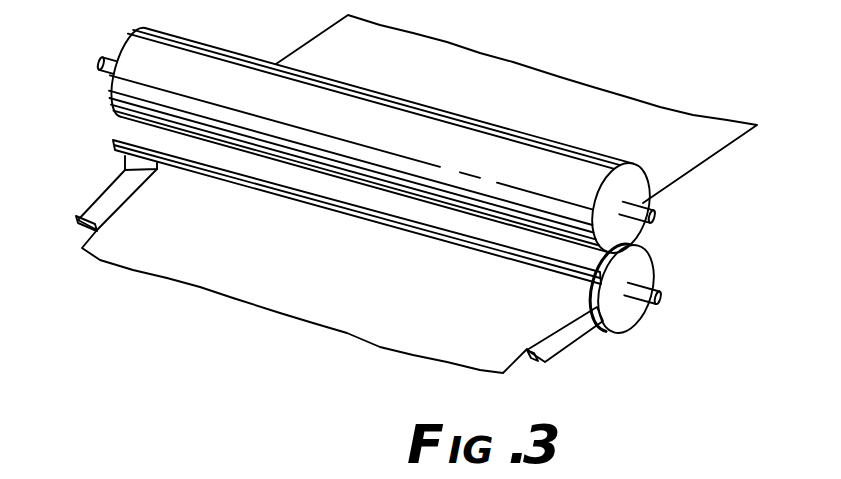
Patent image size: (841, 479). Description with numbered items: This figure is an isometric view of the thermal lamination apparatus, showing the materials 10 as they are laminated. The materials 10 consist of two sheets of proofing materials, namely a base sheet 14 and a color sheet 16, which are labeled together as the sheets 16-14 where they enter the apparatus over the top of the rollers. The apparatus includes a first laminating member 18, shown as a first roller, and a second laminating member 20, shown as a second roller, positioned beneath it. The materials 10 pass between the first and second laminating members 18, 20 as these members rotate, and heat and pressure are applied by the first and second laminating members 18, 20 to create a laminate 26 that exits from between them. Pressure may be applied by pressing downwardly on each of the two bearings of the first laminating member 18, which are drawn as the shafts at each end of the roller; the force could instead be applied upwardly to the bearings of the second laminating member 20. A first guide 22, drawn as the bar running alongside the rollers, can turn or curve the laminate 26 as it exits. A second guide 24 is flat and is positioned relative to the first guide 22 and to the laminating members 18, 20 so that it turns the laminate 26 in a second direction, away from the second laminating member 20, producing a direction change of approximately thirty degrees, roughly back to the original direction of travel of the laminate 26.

The materials 10 is at (514, 52).
The first laminating member 18 is at (537, 137).
The color sheet and base sheet 16-14 is at (697, 194).
The color sheet 16 is at (697, 194).
The base sheet 14 is at (697, 165).
The first guide 22 is at (117, 140).
The laminate 26 is at (305, 315).
The second guide 24 is at (558, 352).
The second laminating member 20 is at (627, 322).